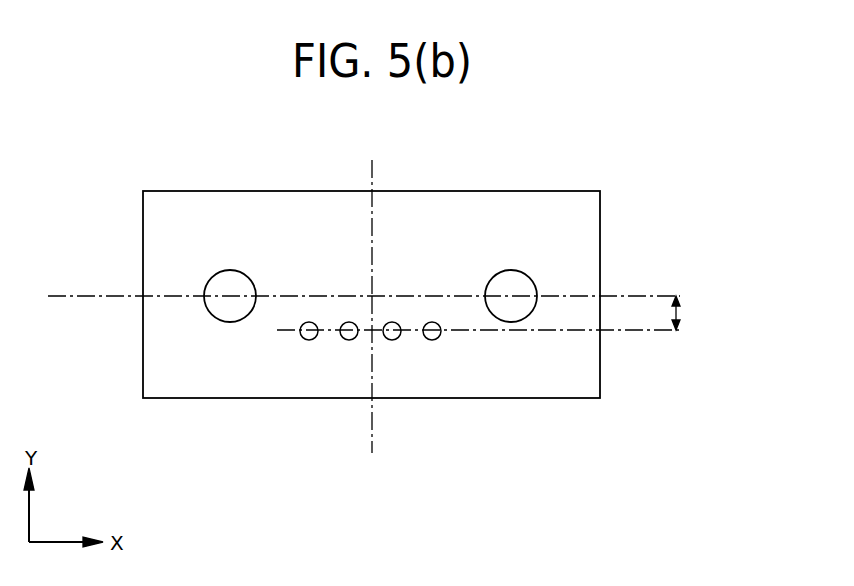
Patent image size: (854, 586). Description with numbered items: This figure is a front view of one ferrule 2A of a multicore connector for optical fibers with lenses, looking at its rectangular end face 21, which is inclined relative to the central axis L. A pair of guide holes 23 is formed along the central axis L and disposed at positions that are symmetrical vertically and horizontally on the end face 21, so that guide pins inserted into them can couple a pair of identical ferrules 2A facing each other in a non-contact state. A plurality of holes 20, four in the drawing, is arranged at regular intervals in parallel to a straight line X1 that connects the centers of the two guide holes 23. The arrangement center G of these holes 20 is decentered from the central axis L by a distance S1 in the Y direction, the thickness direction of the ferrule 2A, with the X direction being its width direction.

The ferrule 2A is at (564, 191).
The end face 21 is at (493, 233).
The guide hole 23 is at (243, 320).
The hole 20 is at (440, 337).
The central axis L is at (371, 296).
The arrangement center G is at (372, 331).
The straight line X1 is at (680, 296).
The distance S1 is at (689, 313).